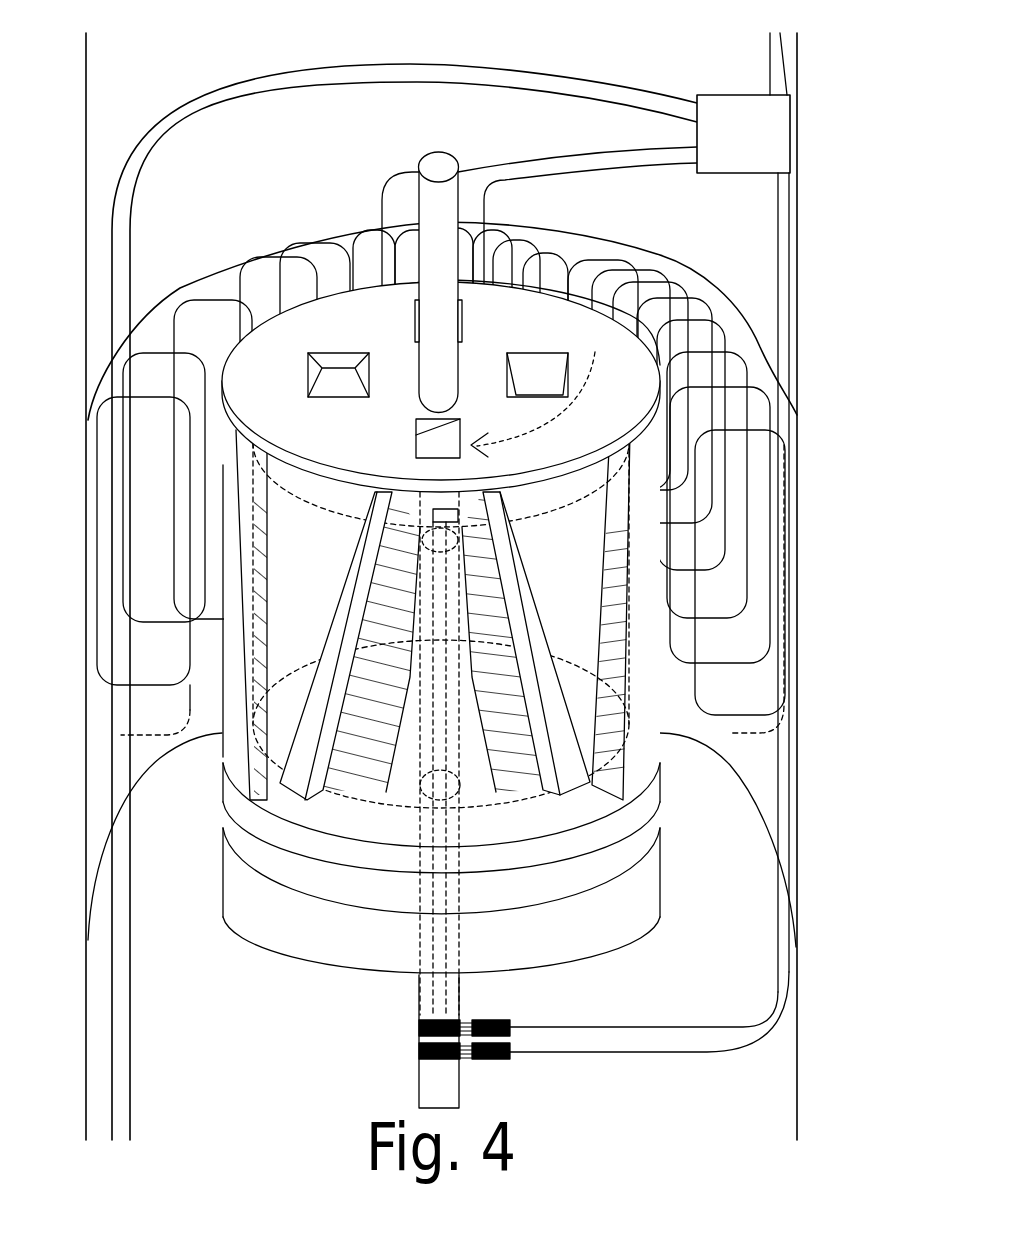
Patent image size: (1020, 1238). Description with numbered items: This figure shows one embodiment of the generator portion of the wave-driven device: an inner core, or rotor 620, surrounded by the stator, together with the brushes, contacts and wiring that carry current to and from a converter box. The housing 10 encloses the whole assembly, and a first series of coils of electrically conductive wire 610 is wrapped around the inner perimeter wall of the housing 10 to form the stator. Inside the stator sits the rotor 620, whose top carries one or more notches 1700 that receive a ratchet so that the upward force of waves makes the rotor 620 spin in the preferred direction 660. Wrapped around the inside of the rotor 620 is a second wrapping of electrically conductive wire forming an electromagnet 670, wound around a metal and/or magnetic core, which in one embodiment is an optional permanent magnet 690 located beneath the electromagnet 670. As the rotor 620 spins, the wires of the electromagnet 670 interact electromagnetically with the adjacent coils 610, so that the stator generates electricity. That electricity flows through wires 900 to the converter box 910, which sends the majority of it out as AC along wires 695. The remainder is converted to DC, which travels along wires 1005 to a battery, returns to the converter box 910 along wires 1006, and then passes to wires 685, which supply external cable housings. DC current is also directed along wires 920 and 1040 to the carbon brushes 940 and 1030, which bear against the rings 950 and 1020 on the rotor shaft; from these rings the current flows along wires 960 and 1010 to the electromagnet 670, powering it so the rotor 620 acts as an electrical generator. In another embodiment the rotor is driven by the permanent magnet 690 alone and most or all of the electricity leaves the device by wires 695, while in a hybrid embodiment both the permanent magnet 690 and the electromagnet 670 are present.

The housing 10 is at (87, 170).
The wires 1005 is at (147, 133).
The wires 1006 is at (173, 138).
The stator coils of electrically conductive wire 610 is at (270, 248).
The wires 900 is at (608, 162).
The converter box 910 is at (760, 110).
The wires 695 is at (768, 43).
The wires 685 is at (768, 77).
The wires 920 is at (790, 238).
The wires 1040 is at (613, 1025).
The preferred direction 660 is at (578, 400).
The notches 1700 is at (414, 434).
The wires 1010 is at (443, 540).
The wires 960 is at (403, 777).
The inner core (rotor) 620 is at (573, 745).
The permanent magnet (magnetic core) 690 is at (340, 797).
The electromagnet 670 is at (367, 778).
The ring 1020 is at (419, 1030).
The carbon brush 1030 is at (493, 1020).
The ring 950 is at (419, 1055).
The carbon brush 940 is at (487, 1060).